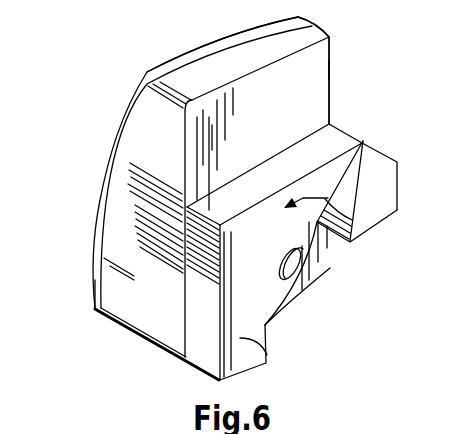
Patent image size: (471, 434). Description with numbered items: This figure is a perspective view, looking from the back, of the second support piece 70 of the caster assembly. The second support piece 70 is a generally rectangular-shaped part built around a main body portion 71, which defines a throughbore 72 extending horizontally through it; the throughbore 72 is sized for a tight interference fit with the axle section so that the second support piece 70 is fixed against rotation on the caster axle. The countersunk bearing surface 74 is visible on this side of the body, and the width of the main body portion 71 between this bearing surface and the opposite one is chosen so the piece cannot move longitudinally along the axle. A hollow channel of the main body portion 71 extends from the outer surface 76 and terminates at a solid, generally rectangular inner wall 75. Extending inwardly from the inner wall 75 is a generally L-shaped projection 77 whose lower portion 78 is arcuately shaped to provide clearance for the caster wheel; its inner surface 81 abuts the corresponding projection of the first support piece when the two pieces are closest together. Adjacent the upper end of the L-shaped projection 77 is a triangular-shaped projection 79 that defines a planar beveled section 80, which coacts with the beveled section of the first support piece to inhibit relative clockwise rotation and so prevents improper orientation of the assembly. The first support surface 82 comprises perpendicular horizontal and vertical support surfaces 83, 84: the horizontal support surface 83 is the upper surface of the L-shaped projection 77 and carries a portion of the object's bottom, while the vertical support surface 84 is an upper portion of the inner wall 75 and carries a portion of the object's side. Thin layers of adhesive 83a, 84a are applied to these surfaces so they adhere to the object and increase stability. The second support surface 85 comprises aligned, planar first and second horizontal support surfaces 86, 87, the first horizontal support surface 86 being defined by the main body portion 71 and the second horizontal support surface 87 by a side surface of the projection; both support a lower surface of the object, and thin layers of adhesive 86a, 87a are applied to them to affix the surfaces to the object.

The second support piece 70 is at (365, 102).
The main body portion 71 is at (238, 43).
The throughbore 72 is at (302, 263).
The countersunk bearing surface 74 is at (310, 294).
The inner wall 75 is at (294, 74).
The outer surface 76 is at (188, 54).
The L-shaped projection 77 is at (368, 227).
The lower portion 78 is at (268, 367).
The triangular-shaped projection 79 is at (388, 192).
The beveled section 80 is at (372, 163).
The inner surface 81 is at (280, 241).
The first support surface 82 is at (339, 83).
The horizontal support surface 83 is at (278, 190).
The layer of adhesive 83a is at (327, 165).
The vertical support surface 84 is at (270, 145).
The layer of adhesive 84a is at (287, 106).
The second support surface 85 is at (141, 163).
The first horizontal support surface 86 is at (138, 207).
The layer of adhesive 86a is at (130, 283).
The second horizontal support surface 87 is at (175, 357).
The layer of adhesive 87a is at (186, 349).